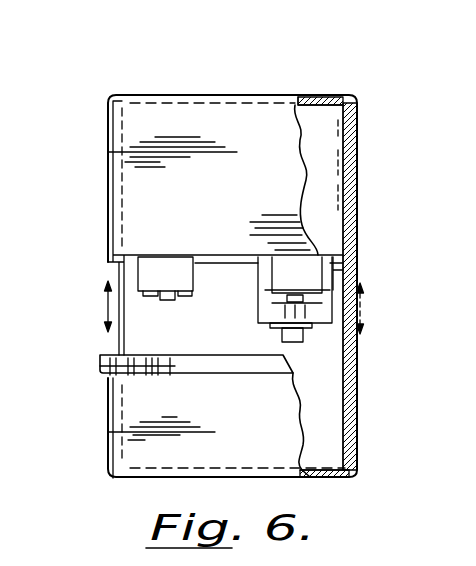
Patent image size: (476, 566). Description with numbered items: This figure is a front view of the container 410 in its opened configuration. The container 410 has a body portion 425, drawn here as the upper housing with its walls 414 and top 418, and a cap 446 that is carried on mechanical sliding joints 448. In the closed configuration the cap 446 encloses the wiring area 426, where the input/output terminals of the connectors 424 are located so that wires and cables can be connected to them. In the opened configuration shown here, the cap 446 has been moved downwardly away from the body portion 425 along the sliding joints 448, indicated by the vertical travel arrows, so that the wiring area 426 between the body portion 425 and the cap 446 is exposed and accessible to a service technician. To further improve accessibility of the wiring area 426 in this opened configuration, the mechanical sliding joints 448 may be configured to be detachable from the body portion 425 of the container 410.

The container 410 is at (212, 90).
The top cover 418 is at (322, 97).
The housing wall 414 is at (362, 168).
The body portion 425 is at (143, 200).
The valve assembly 424 is at (262, 302).
The wiring area 426 is at (168, 333).
The cap 446 is at (323, 480).
The mechanical sliding joints 448 is at (108, 336).